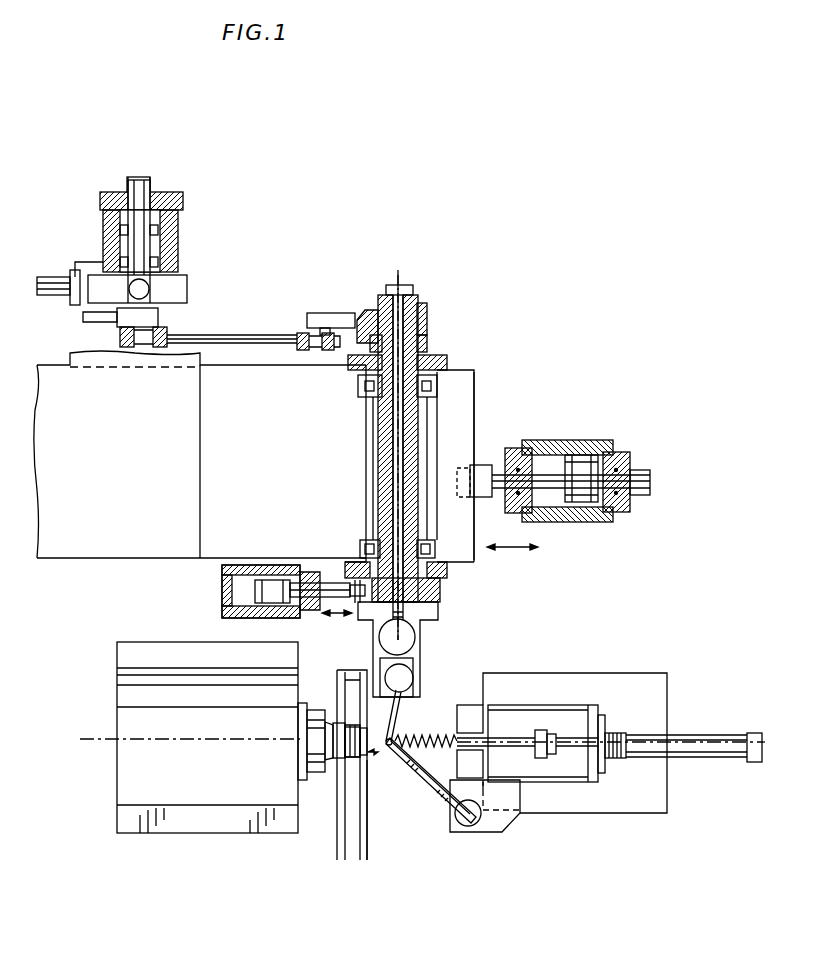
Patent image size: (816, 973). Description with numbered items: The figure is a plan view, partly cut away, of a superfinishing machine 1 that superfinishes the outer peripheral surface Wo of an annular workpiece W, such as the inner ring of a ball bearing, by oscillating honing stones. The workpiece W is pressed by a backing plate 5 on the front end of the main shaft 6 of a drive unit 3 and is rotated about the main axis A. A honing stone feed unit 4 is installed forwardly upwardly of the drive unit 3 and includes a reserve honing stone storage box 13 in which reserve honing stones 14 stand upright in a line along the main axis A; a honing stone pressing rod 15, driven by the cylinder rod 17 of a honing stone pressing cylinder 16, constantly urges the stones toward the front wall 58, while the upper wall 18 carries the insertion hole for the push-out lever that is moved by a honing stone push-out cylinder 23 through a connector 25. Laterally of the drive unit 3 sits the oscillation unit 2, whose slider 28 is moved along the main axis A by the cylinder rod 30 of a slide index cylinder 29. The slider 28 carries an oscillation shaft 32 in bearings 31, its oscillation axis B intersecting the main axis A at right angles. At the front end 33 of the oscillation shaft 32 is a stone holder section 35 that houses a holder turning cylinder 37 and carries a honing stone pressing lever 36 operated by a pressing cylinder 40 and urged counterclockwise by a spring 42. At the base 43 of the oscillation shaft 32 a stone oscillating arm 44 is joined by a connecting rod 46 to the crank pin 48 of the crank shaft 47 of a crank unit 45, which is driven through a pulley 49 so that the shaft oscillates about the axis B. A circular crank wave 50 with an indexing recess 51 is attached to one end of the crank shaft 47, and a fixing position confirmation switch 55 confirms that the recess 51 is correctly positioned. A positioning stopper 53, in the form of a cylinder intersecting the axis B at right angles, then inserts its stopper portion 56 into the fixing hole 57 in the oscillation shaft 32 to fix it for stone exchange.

The superfinishing machine 1 is at (335, 105).
The oscillation unit 2 is at (460, 370).
The drive unit 3 is at (182, 805).
The honing stone feed unit 4 is at (578, 705).
The backing plate 5 is at (326, 765).
The main shaft 6 is at (307, 777).
The reserve honing stone storage box 13 is at (482, 705).
The reserve honing stones 14 is at (446, 738).
The honing stone pressing rod 15 is at (520, 738).
The honing stone pressing cylinder 16 is at (690, 738).
The cylinder rod 17 is at (565, 782).
The upper wall 18 is at (457, 735).
The honing stone push-out cylinder 23 is at (472, 828).
The connector 25 is at (458, 790).
The slider 28 is at (474, 400).
The slide index cylinder 29 is at (577, 441).
The cylinder rod 30 is at (494, 472).
The bearings 31 is at (437, 388).
The oscillation shaft 32 is at (420, 425).
The front end 33 is at (441, 592).
The stone holder section 35 is at (441, 613).
The honing stone pressing lever 36 is at (400, 722).
The holder turning cylinder 37 is at (408, 637).
The pressing cylinder 40 is at (402, 674).
The spring 42 is at (385, 705).
The base 43 is at (410, 320).
The stone oscillating arm 44 is at (326, 318).
The crank unit 45 is at (179, 262).
The connecting rod 46 is at (270, 337).
The crank shaft 47 is at (145, 248).
The crank pin 48 is at (120, 334).
The pulley 49 is at (167, 194).
The crank wave 50 is at (177, 298).
The recess 51 is at (158, 285).
The positioning stopper 53 is at (224, 578).
The fixing position confirmation switch 55 is at (54, 277).
The stopper portion 56 is at (327, 586).
The fixing hole 57 is at (355, 604).
The front wall 58 is at (352, 757).
The main axis A is at (93, 745).
The oscillation axis B is at (400, 282).
The annular workpiece W is at (362, 758).
The outer peripheral surface Wo is at (367, 770).